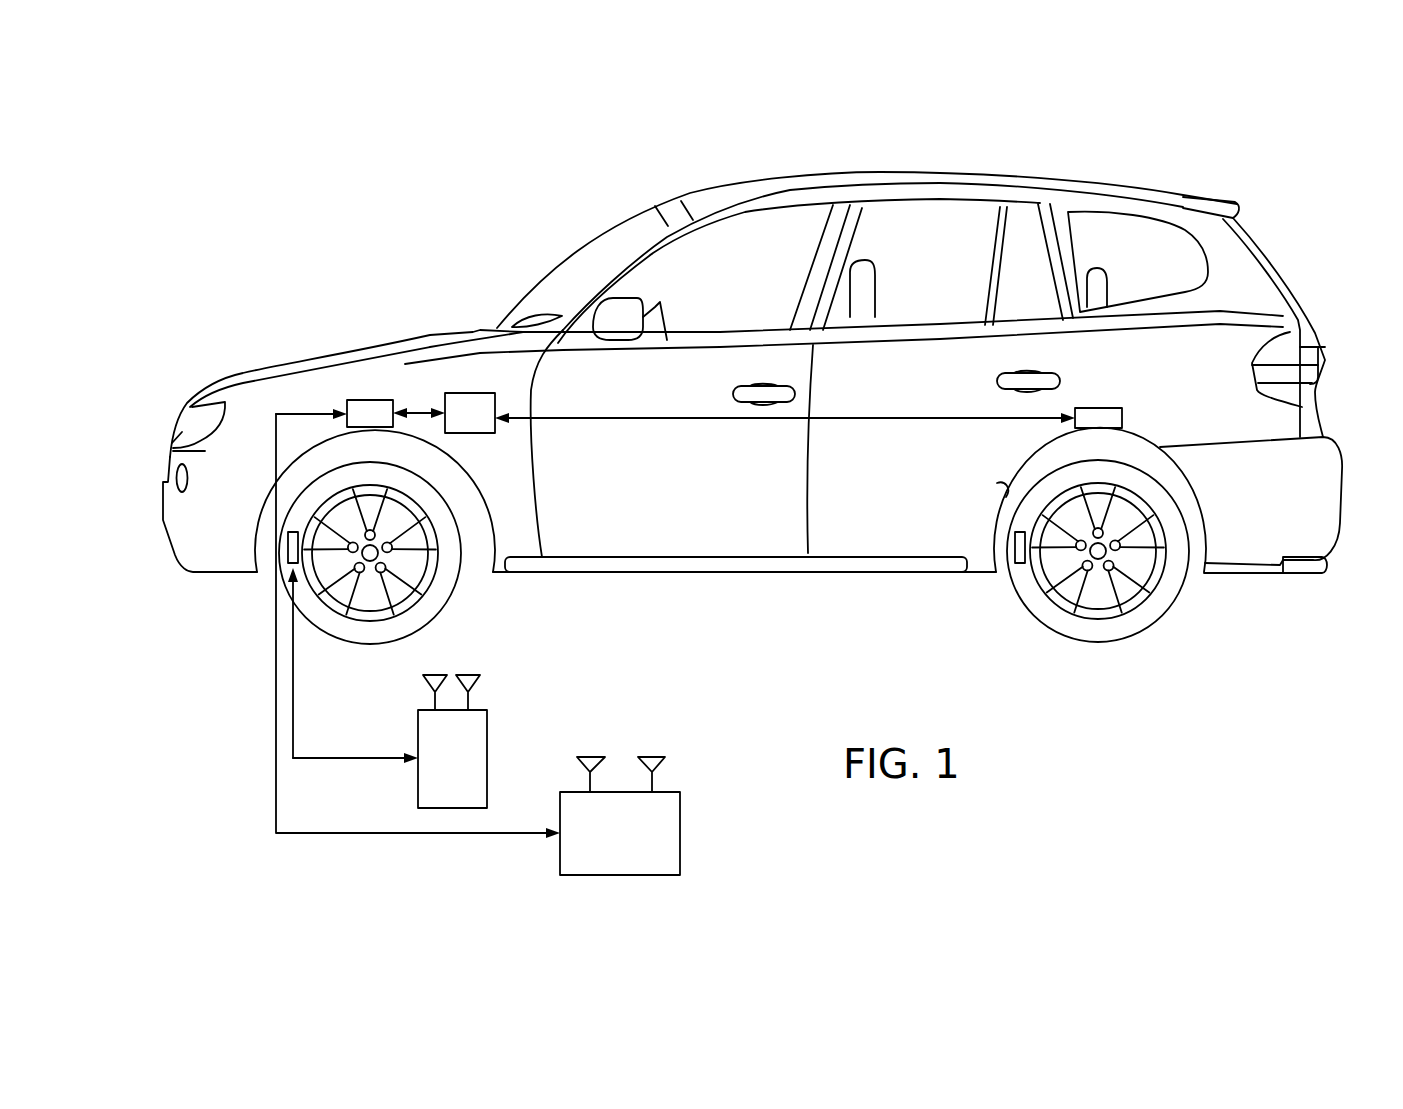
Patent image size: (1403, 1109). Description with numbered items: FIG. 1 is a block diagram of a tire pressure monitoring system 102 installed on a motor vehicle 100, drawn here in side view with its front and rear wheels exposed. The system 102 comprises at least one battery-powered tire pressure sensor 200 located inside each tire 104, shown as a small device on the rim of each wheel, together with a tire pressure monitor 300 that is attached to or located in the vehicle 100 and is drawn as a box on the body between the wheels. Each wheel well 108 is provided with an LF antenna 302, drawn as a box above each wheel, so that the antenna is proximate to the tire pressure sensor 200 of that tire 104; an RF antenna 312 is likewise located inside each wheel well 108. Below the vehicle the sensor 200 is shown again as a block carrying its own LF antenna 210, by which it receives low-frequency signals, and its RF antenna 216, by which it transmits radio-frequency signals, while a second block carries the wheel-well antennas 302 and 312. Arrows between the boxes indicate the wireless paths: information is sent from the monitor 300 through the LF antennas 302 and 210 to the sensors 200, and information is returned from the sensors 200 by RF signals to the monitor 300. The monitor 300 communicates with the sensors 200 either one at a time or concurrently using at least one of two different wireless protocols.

The motor vehicle 100 is at (253, 372).
The tire pressure monitoring system 102 is at (538, 633).
The tire 104 is at (432, 604).
The wheel well 108 is at (457, 482).
The tire pressure sensor 200 is at (288, 549).
The LF antenna 210 is at (430, 700).
The RF antenna 216 is at (472, 700).
The tire pressure monitor 300 is at (463, 393).
The LF antenna 302 is at (363, 400).
The RF antenna 312 is at (655, 782).